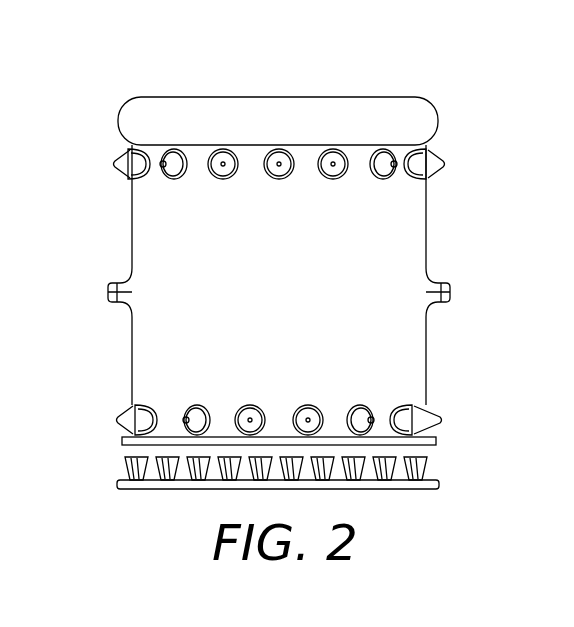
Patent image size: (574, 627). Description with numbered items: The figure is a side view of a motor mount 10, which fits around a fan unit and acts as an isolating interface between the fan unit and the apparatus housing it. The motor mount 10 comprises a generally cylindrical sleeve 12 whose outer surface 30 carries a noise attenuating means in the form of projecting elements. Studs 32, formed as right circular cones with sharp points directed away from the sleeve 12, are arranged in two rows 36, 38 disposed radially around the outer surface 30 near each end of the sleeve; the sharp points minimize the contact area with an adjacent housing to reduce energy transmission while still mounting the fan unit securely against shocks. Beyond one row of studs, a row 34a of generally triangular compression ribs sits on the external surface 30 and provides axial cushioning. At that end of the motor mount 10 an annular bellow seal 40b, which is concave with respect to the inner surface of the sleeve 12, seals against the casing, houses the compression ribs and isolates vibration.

The motor mount 10 is at (100, 80).
The sleeve 12 is at (432, 229).
The outer surface 30 is at (212, 247).
The studs 32 is at (437, 412).
The row of compression ribs 34a is at (124, 475).
The row of studs 36 is at (108, 143).
The row of studs 38 is at (108, 407).
The bellow seal 40b is at (428, 119).